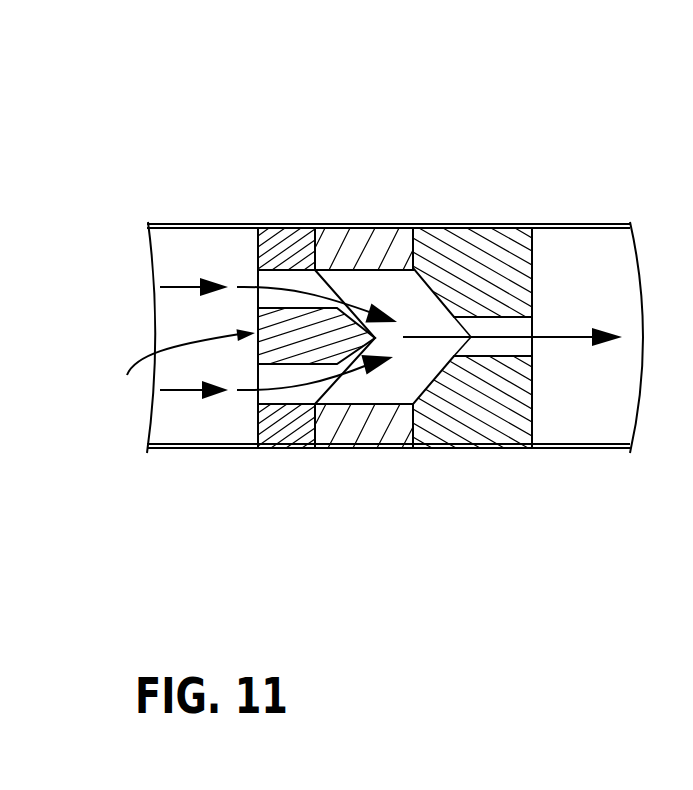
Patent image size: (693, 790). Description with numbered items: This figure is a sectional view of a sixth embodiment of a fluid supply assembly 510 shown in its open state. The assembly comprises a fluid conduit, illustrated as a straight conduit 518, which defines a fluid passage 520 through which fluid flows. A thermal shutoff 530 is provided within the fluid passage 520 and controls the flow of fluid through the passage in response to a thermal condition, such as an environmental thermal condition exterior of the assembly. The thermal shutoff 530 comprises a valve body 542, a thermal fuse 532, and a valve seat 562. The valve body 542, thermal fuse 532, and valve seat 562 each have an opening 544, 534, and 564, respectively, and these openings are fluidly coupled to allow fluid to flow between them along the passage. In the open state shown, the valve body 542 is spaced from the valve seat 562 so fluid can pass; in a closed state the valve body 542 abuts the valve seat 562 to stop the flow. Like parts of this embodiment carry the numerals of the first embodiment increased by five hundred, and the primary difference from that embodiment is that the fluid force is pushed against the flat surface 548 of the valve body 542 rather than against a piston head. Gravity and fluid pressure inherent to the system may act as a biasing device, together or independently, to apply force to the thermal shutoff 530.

The fluid assembly 510 is at (554, 153).
The straight conduit 518 is at (580, 224).
The fluid passage 520 is at (199, 247).
The thermal shutoff 530 is at (522, 533).
The thermal fuse 532 is at (356, 247).
The opening 534 is at (393, 378).
The valve body 542 is at (282, 247).
The opening 544 is at (300, 395).
The flat surface 548 is at (176, 369).
The valve seat 562 is at (471, 247).
The opening 564 is at (497, 345).